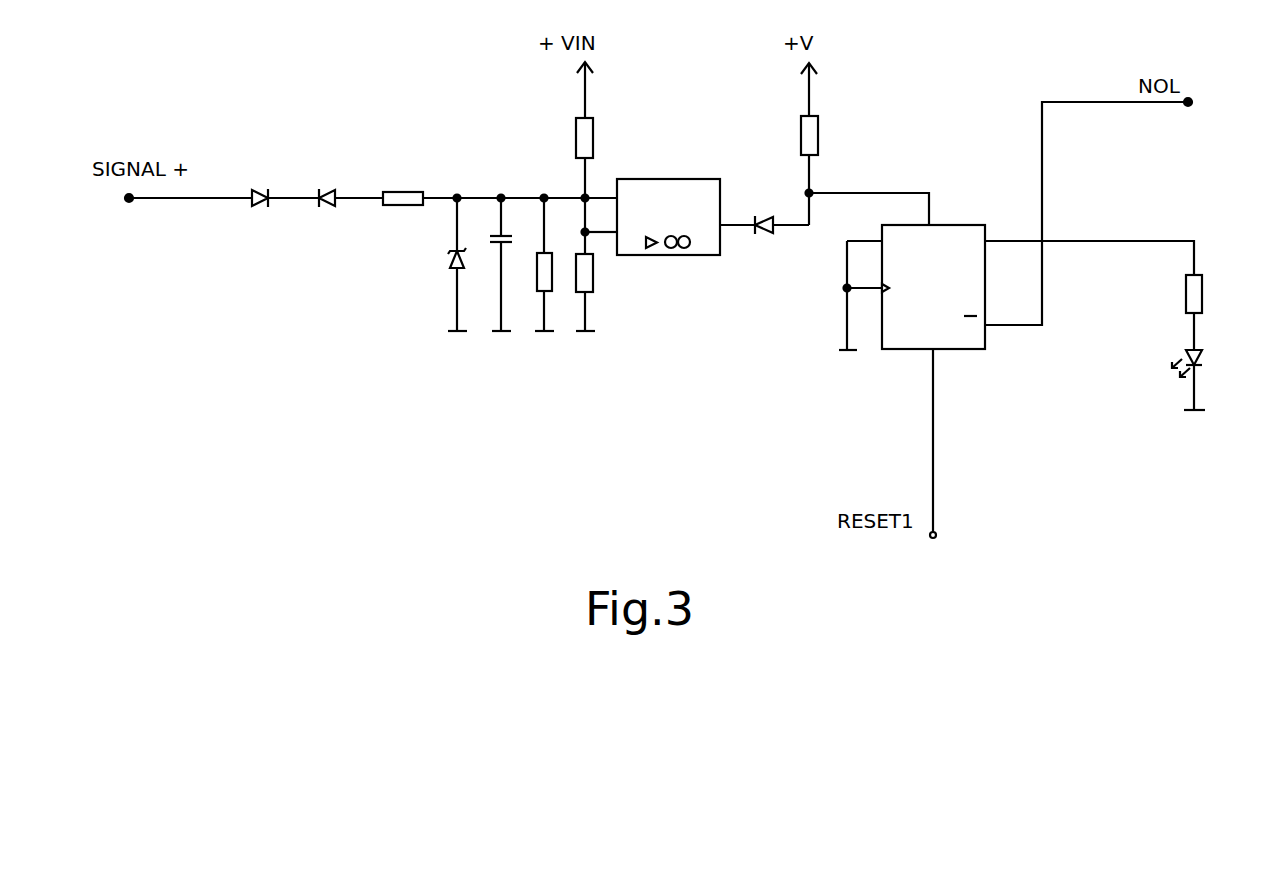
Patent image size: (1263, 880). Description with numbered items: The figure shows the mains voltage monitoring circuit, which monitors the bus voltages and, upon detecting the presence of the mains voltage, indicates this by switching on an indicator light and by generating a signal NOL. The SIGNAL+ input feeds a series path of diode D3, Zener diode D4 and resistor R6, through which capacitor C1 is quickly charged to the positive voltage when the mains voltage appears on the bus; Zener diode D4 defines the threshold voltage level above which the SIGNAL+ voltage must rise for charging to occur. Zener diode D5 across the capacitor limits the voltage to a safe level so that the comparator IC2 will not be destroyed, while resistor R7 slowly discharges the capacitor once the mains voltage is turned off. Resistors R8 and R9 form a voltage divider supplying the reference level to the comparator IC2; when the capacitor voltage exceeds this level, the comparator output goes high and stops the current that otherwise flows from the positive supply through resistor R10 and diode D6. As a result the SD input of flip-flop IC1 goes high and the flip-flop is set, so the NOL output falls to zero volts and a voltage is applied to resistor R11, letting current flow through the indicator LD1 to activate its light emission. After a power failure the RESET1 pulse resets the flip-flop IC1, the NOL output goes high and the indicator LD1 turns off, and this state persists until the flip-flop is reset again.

The diode D3 is at (264, 182).
The Zener diode D4 is at (327, 182).
The Zener diode D5 is at (441, 264).
The diode D6 is at (782, 211).
The resistor R6 is at (403, 184).
The resistor R7 is at (531, 264).
The resistor R8 is at (599, 175).
The resistor R9 is at (600, 281).
The resistor R10 is at (830, 169).
The resistor R11 is at (1215, 312).
The capacitor C1 is at (512, 264).
The flip-flop IC1 is at (934, 381).
The comparator IC2 is at (668, 202).
The indicator light LD1 is at (1209, 380).